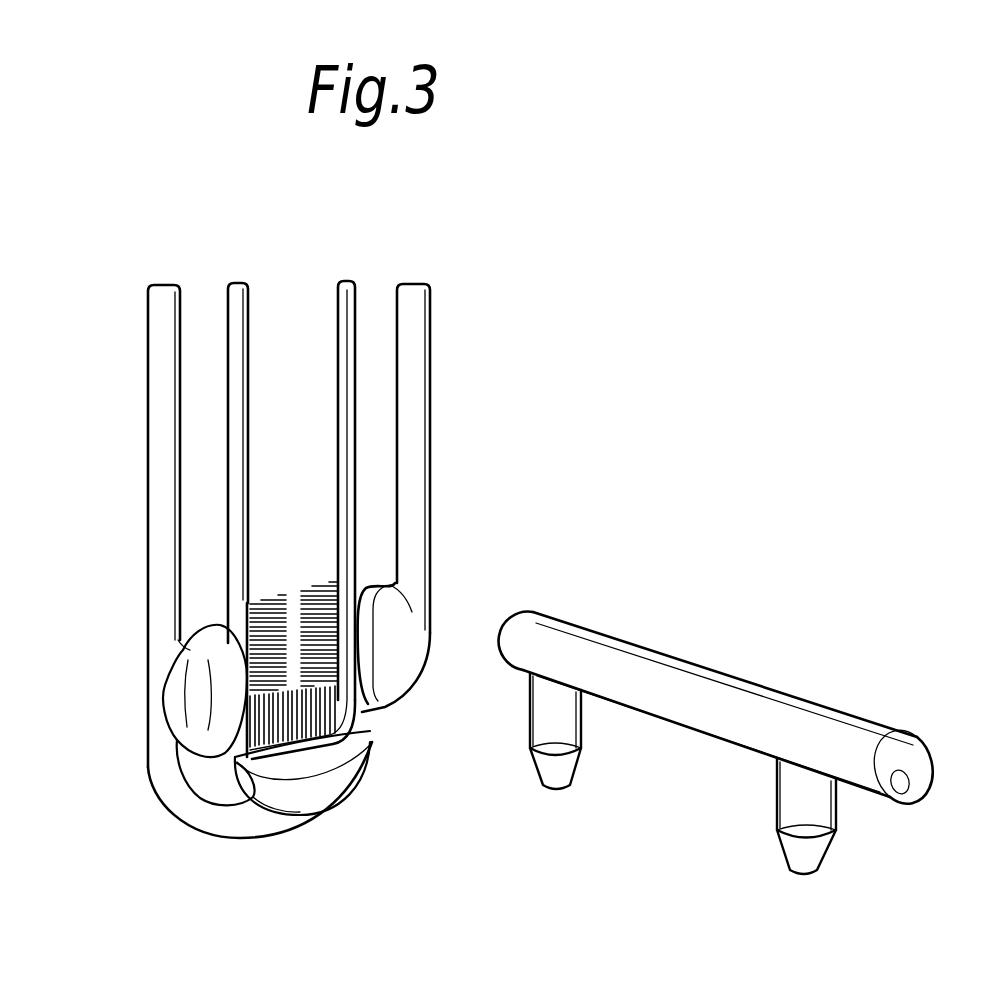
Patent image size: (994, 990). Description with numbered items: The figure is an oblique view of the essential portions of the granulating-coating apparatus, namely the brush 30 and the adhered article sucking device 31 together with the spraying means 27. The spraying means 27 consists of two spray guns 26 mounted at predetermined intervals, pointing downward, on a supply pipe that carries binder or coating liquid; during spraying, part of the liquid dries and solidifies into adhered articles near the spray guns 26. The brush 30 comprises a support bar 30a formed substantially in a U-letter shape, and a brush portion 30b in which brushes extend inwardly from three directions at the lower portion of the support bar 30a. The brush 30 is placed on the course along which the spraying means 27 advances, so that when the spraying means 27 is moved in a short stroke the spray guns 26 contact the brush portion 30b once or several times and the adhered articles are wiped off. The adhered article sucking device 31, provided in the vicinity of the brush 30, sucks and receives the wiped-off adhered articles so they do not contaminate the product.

The spray guns 26 is at (787, 777).
The spraying means 27 is at (570, 637).
The brush 30 is at (240, 313).
The support bar 30a is at (352, 455).
The brush portion 30b is at (353, 703).
The adhered article sucking device 31 is at (155, 568).